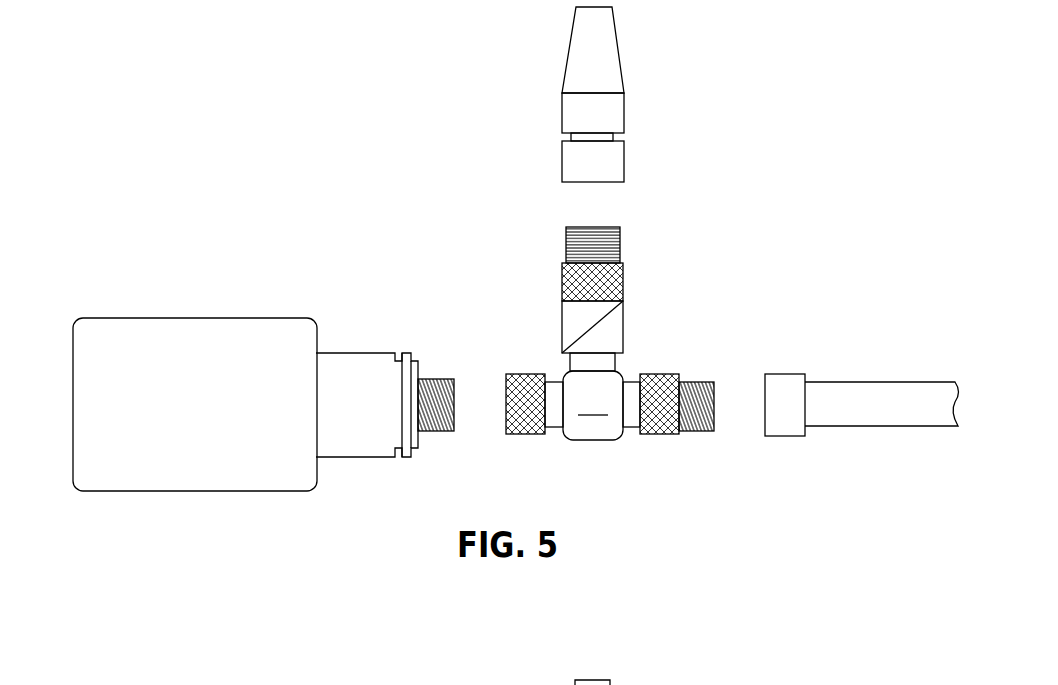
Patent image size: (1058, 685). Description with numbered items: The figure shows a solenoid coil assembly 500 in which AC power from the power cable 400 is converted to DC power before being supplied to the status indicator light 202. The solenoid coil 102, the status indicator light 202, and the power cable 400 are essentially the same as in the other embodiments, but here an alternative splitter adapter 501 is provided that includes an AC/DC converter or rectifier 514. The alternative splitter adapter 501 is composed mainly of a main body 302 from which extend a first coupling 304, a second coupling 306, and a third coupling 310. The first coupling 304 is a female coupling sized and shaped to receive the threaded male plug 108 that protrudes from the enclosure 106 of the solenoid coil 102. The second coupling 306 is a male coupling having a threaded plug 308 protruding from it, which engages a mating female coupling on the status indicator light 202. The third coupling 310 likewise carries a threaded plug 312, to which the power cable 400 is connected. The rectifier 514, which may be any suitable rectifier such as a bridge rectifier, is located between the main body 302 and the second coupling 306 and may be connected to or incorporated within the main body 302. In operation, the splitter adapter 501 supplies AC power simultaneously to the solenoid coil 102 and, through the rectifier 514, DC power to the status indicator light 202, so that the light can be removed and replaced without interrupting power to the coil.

The solenoid coil assembly 500 is at (102, 64).
The status indicator light 202 is at (534, 70).
The solenoid coil 102 is at (248, 373).
The enclosure 106 is at (195, 318).
The threaded male plug 108 is at (437, 378).
The alternative splitter adapter 501 is at (616, 322).
The threaded plug 308 is at (620, 240).
The second coupling 306 is at (624, 282).
The rectifier 514 is at (624, 326).
The main body 302 is at (593, 405).
The first coupling 304 is at (522, 374).
The third coupling 310 is at (658, 374).
The threaded plug 312 is at (705, 382).
The power cable 400 is at (856, 350).